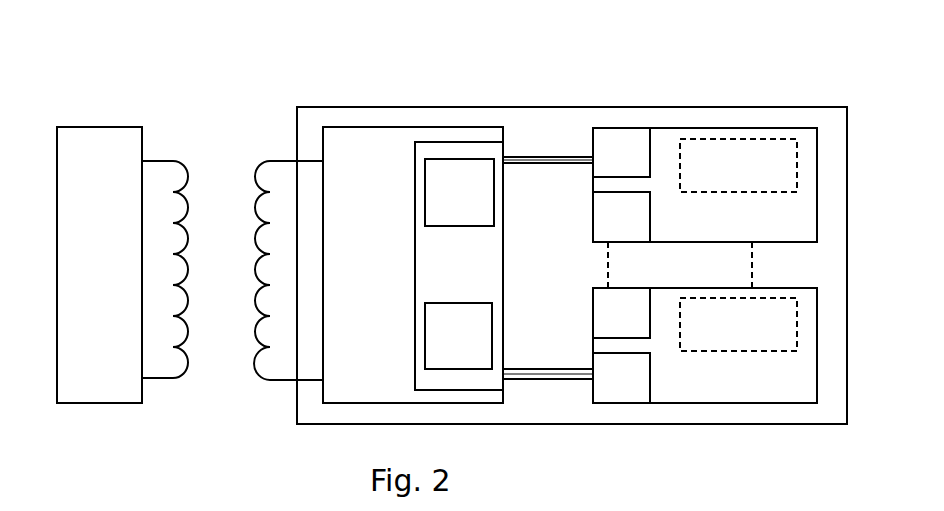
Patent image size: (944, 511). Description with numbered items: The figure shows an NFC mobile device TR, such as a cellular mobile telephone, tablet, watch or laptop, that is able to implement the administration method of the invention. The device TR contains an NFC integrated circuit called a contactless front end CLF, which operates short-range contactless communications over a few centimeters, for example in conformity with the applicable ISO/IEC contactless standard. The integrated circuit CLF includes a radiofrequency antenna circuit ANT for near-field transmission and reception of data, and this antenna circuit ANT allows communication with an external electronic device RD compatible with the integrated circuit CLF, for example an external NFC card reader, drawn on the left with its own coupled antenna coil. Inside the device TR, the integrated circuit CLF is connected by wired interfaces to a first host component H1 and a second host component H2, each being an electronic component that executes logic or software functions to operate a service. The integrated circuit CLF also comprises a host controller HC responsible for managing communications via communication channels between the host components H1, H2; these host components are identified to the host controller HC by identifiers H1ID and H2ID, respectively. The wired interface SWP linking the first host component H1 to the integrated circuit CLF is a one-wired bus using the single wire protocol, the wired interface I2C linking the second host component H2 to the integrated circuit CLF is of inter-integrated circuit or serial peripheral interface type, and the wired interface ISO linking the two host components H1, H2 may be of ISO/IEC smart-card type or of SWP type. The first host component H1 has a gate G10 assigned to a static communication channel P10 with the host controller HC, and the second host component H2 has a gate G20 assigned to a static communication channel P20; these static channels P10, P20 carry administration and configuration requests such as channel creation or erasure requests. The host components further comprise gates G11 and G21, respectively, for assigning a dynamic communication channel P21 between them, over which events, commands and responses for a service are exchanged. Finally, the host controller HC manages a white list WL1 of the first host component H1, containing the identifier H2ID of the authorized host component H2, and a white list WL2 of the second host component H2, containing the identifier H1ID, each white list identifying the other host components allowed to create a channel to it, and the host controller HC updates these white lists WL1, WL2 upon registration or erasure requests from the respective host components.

The external electronic device RD is at (122, 127).
The radiofrequency antenna circuit ANT is at (262, 161).
The NFC mobile device TR is at (297, 107).
The contactless front end CLF is at (380, 127).
The host controller HC is at (485, 142).
The white list of the first host component WL1 is at (425, 203).
The white list of the second host component WL2 is at (425, 346).
The static communication channel P10 is at (520, 157).
The wired interface SWP is at (524, 163).
The static communication channel P20 is at (530, 369).
The wired interface I2C is at (553, 380).
The first host component H1 is at (720, 128).
The gate G10 is at (605, 128).
The gate G11 is at (595, 197).
The identifier of the first host component H1ID is at (738, 165).
The second host component H2 is at (665, 403).
The gate G21 is at (593, 320).
The gate G20 is at (596, 403).
The identifier of the second host component H2ID is at (738, 324).
The dynamic communication channel P21 is at (608, 266).
The wired interface ISO is at (752, 266).